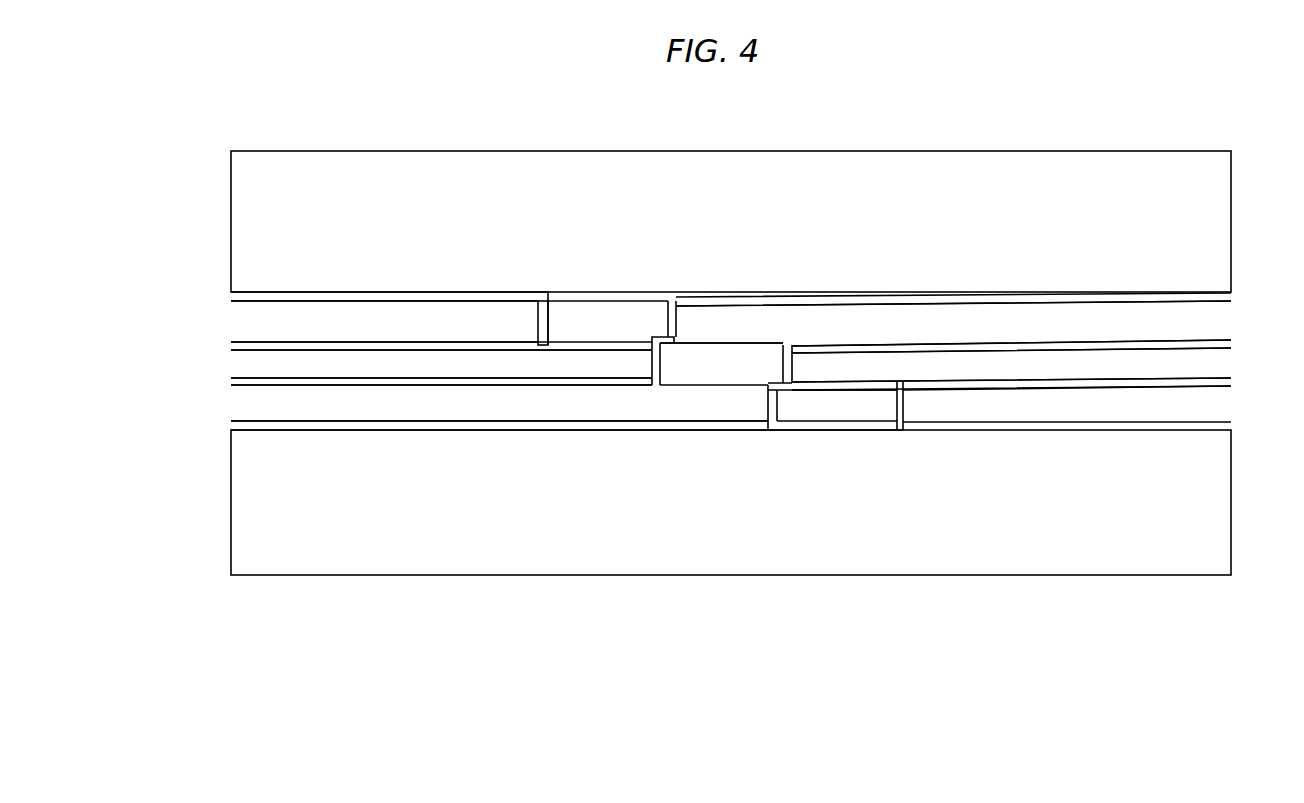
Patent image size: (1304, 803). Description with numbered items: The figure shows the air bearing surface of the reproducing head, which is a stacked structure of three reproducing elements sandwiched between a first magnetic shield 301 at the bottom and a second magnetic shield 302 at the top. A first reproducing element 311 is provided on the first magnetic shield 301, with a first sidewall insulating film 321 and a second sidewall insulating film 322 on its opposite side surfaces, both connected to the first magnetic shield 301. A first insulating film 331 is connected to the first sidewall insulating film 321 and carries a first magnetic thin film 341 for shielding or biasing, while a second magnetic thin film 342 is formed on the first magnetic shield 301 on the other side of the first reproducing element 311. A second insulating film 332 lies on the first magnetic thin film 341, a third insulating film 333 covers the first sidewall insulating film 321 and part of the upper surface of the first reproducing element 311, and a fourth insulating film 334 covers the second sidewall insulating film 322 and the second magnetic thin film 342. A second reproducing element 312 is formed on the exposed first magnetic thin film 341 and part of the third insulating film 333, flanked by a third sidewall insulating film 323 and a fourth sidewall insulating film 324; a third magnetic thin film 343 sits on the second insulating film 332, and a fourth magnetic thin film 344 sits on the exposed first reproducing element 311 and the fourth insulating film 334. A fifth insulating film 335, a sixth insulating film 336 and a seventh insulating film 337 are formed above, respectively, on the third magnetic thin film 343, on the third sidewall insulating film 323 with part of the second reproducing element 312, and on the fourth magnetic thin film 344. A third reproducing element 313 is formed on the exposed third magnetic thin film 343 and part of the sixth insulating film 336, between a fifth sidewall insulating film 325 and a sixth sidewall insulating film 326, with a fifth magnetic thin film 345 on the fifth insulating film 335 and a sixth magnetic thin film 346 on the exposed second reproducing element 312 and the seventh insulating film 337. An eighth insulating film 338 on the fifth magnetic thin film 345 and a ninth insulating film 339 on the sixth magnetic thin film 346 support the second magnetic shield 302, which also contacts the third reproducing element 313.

The first magnetic shield 301 is at (1232, 495).
The second magnetic shield 302 is at (1232, 228).
The first reproducing element 311 is at (882, 390).
The second reproducing element 312 is at (772, 345).
The third reproducing element 313 is at (627, 298).
The first sidewall insulating film 321 is at (766, 407).
The second sidewall insulating film 322 is at (905, 407).
The third sidewall insulating film 323 is at (650, 362).
The fourth sidewall insulating film 324 is at (795, 370).
The fifth sidewall insulating film 325 is at (538, 321).
The sixth sidewall insulating film 326 is at (680, 324).
The first insulating film 331 is at (231, 429).
The second insulating film 332 is at (231, 385).
The third insulating film 333 is at (782, 393).
The fourth insulating film 334 is at (1232, 383).
The fifth insulating film 335 is at (231, 345).
The sixth insulating film 336 is at (665, 348).
The seventh insulating film 337 is at (1232, 341).
The eighth insulating film 338 is at (231, 302).
The ninth insulating film 339 is at (1232, 293).
The first magnetic thin film 341 is at (231, 407).
The second magnetic thin film 342 is at (1232, 413).
The third magnetic thin film 343 is at (231, 367).
The fourth magnetic thin film 344 is at (1232, 362).
The fifth magnetic thin film 345 is at (231, 322).
The sixth magnetic thin film 346 is at (1232, 319).